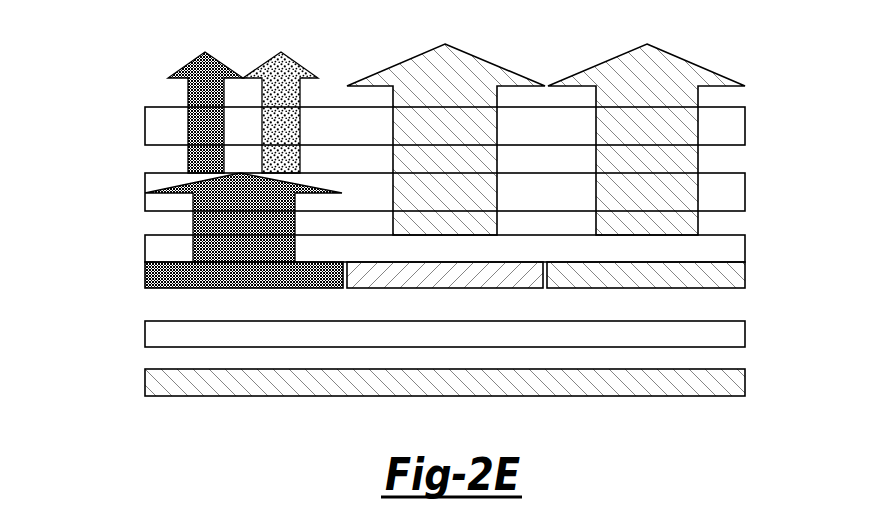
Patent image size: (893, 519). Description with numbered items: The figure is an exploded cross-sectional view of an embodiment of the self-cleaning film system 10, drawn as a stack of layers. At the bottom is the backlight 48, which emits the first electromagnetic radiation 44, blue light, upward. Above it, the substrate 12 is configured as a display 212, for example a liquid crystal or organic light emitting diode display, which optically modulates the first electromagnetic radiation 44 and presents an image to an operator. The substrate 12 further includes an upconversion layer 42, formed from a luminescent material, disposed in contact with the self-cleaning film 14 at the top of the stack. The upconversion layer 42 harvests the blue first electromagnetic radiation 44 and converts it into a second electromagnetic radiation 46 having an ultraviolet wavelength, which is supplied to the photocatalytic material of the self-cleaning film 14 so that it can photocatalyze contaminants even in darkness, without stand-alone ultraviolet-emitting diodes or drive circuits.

The self-cleaning film system 10 is at (415, 205).
The substrate 12 is at (397, 291).
The display 212 is at (397, 291).
The self-cleaning film 14 is at (745, 126).
The upconversion layer 42 is at (745, 193).
The first electromagnetic radiation 44 is at (203, 68).
The second electromagnetic radiation 46 is at (290, 62).
The backlight 48 is at (745, 382).